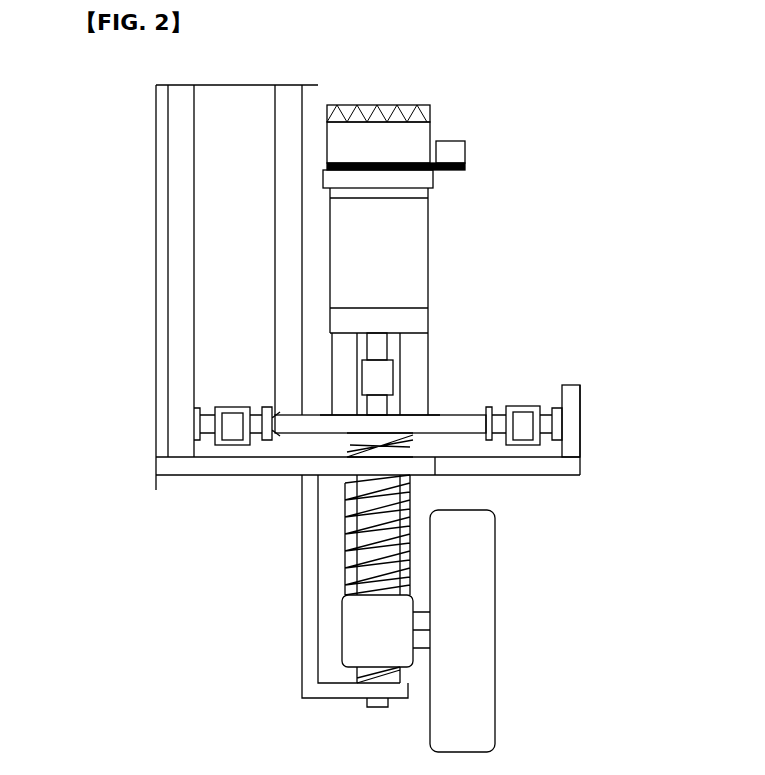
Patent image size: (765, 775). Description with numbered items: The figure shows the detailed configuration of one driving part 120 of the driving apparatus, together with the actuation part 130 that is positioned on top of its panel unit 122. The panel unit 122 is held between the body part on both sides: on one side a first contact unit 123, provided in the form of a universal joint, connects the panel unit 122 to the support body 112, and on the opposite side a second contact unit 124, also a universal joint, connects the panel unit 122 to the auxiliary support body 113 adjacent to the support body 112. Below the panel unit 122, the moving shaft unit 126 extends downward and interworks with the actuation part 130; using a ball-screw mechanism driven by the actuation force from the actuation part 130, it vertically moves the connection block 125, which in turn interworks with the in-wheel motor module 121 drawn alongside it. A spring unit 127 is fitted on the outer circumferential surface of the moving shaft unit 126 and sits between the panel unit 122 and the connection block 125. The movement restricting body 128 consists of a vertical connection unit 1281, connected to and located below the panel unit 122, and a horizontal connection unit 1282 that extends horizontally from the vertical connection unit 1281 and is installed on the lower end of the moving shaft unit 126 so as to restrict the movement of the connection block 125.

The support body 112 is at (178, 192).
The auxiliary support body 113 is at (582, 411).
The driving part 120 is at (615, 345).
The in-wheel motor module 121 is at (495, 597).
The panel unit 122 is at (450, 412).
The first contact unit 123 is at (232, 407).
The second contact unit 124 is at (522, 406).
The connection block 125 is at (400, 630).
The moving shaft unit 126 is at (405, 487).
The spring unit 127 is at (410, 530).
The movement restricting body 128 is at (275, 603).
The vertical connection unit 1281 is at (302, 572).
The horizontal connection unit 1282 is at (340, 700).
The actuation part 130 is at (437, 124).